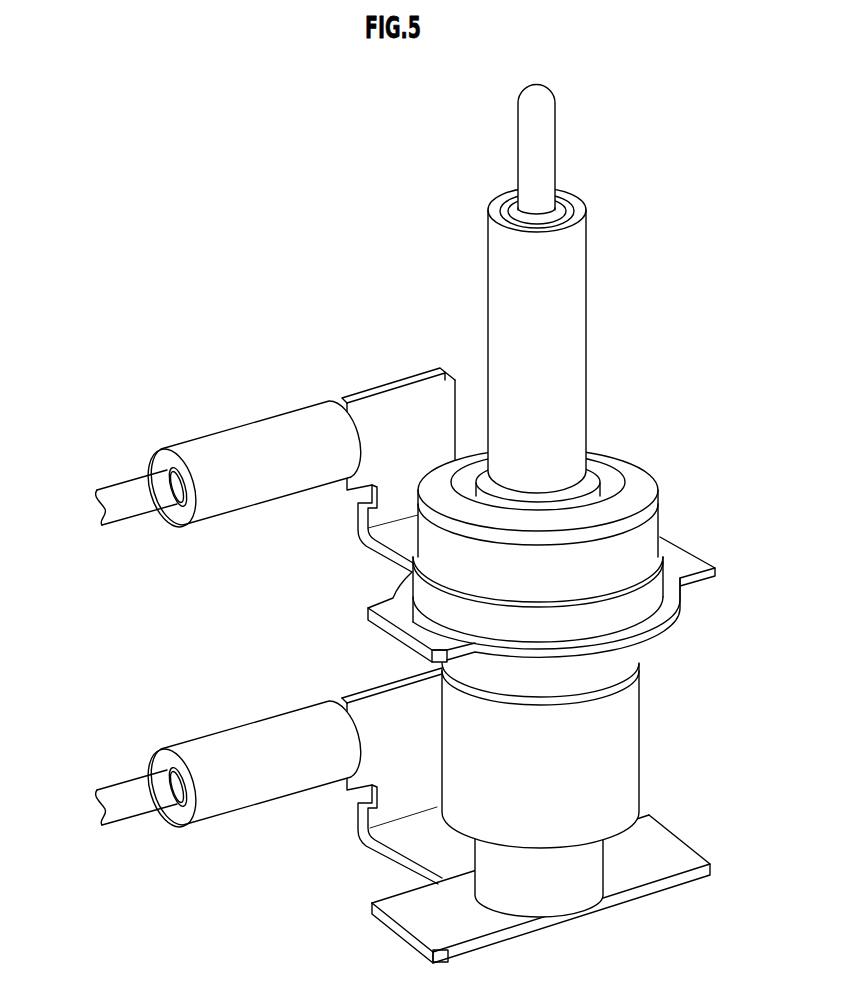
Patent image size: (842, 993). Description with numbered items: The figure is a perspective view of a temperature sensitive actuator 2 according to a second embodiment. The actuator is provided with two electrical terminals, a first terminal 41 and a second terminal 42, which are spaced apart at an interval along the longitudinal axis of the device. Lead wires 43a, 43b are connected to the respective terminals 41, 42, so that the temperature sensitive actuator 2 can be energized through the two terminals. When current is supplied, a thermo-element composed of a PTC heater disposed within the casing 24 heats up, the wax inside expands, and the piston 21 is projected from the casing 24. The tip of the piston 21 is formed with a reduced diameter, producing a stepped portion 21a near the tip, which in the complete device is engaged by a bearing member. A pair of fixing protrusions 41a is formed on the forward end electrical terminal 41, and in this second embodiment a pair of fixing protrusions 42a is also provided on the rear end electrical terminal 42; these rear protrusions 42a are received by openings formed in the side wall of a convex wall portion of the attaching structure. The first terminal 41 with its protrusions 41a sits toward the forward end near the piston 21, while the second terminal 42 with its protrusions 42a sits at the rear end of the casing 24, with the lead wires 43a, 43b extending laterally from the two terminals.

The temperature sensitive actuator 2 is at (263, 264).
The piston 21 is at (537, 127).
The stepped portion 21a is at (565, 203).
The casing 24 is at (622, 733).
The first terminal 41 is at (405, 396).
The fixing protrusions 41a is at (393, 612).
The second terminal 42 is at (367, 690).
The fixing protrusions 42a is at (685, 858).
The lead wire 43a is at (138, 487).
The lead wire 43b is at (138, 787).